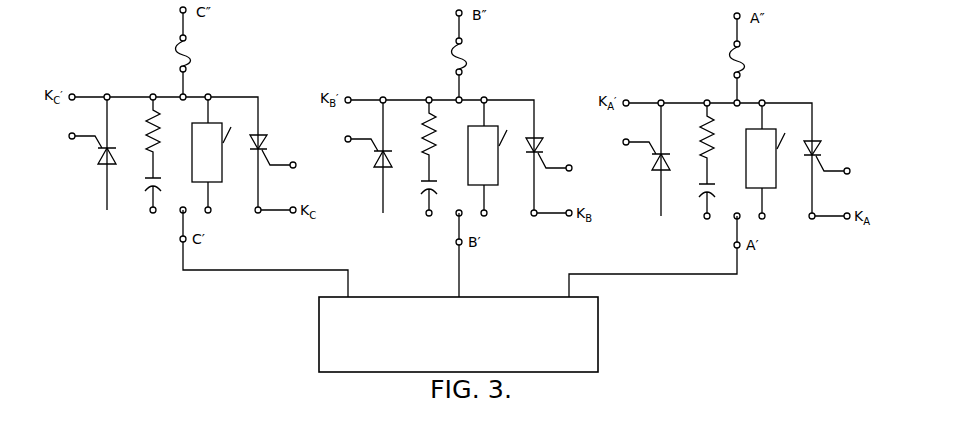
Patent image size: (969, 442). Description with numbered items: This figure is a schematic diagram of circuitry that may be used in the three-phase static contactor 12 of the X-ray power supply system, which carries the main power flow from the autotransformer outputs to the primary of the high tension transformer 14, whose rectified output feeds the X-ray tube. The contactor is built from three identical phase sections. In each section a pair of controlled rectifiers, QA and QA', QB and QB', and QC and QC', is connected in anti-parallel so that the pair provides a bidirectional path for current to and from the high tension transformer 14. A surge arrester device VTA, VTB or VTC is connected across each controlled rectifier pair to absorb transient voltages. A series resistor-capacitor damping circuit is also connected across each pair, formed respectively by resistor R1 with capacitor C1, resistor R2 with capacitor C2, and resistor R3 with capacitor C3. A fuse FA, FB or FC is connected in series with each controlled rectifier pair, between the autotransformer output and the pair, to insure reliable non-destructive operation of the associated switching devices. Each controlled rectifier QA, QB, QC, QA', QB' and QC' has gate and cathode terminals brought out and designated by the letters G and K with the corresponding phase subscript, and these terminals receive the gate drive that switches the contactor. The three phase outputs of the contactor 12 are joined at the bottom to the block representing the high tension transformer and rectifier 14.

The three-phase static contactor 12 is at (138, 266).
The high voltage transformer 14 is at (322, 297).
The resistor R1 is at (690, 143).
The resistor R2 is at (412, 140).
The resistor R3 is at (146, 131).
The capacitor C1 is at (690, 200).
The capacitor C2 is at (412, 197).
The capacitor C3 is at (144, 181).
The controlled rectifier QA is at (838, 153).
The controlled rectifier QB is at (560, 150).
The controlled rectifier QC is at (284, 147).
The controlled rectifier QA' is at (632, 155).
The controlled rectifier QB' is at (354, 152).
The controlled rectifier QC' is at (78, 149).
The surge arrester device VTA is at (771, 159).
The surge arrester device VTB is at (493, 156).
The surge arrester device VTC is at (217, 153).
The fuse FA is at (748, 59).
The fuse FB is at (470, 56).
The fuse FC is at (188, 49).